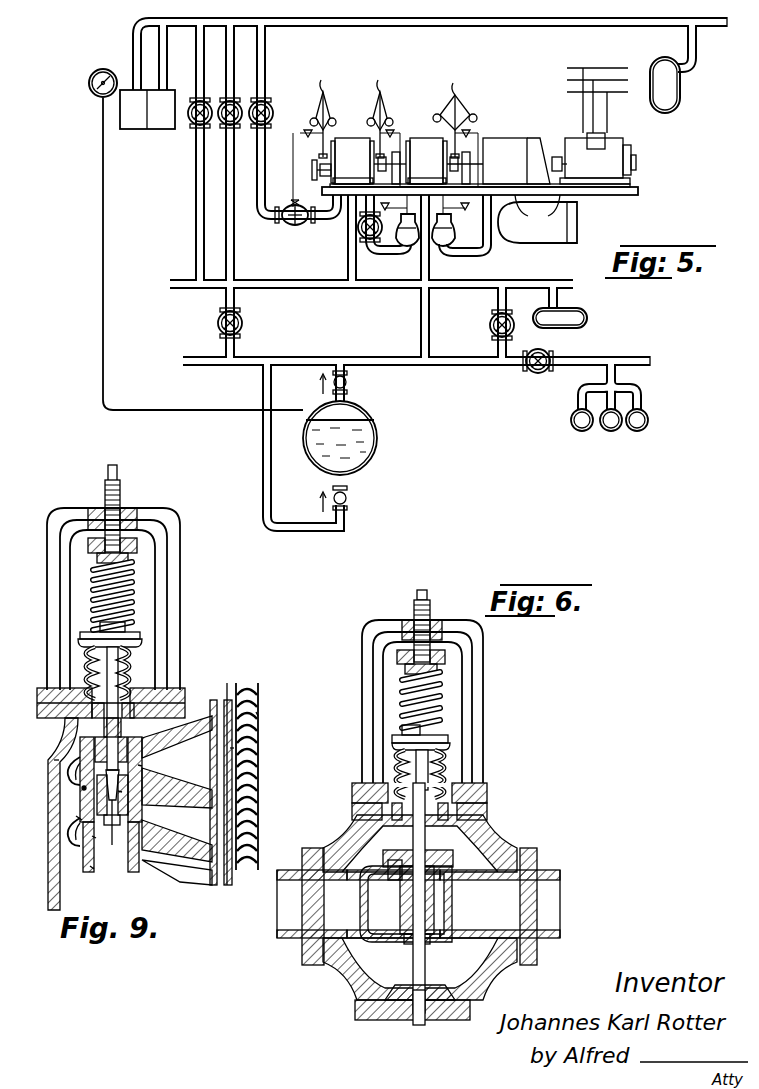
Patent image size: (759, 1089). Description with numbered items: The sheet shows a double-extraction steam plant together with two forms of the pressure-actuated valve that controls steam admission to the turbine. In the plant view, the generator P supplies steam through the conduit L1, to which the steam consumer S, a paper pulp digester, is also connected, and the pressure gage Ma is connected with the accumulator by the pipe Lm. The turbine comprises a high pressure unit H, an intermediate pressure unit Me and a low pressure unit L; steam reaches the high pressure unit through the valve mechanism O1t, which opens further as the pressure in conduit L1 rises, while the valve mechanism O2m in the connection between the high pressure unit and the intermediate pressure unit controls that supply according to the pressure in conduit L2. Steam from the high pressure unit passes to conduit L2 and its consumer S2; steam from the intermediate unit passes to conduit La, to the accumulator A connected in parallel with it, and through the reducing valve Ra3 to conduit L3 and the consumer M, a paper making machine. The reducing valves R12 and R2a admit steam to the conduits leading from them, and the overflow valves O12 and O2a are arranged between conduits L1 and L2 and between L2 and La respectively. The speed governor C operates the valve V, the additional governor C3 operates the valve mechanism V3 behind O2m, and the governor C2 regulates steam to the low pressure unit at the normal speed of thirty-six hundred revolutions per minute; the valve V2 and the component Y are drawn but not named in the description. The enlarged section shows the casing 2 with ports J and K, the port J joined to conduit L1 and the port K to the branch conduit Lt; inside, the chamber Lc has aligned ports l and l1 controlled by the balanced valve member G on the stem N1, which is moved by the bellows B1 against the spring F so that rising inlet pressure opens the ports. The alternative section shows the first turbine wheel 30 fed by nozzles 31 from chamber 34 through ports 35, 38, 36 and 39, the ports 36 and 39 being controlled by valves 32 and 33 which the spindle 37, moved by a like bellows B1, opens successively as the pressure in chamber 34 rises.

In FIG. 5, the pressure gage Ma is at (103, 68).
In FIG. 5, the generator P is at (137, 131).
In FIG. 5, the reducing valve R12 is at (193, 124).
In FIG. 5, the overflow valve O12 is at (237, 125).
In FIG. 5, the valve mechanism O1t is at (269, 104).
In FIG. 6, the valve mechanism O1t is at (335, 711).
In FIG. 5, the speed governor C is at (314, 135).
In FIG. 5, the governor C3 is at (383, 127).
In FIG. 5, the governor C2 is at (455, 127).
In FIG. 5, the high pressure unit H is at (352, 138).
In FIG. 5, the intermediate pressure unit Me is at (425, 138).
In FIG. 5, the low pressure unit L is at (499, 138).
In FIG. 5, the conduit L1 is at (438, 27).
In FIG. 9, the conduit L1 is at (258, 843).
In FIG. 6, the conduit L1 is at (283, 868).
In FIG. 5, the steam consumer S is at (683, 99).
In FIG. 5, the condenser Y is at (577, 222).
In FIG. 5, the valve mechanism V is at (295, 223).
In FIG. 5, the valve mechanism O2m is at (362, 234).
In FIG. 5, the valve mechanism V3 is at (404, 241).
In FIG. 5, the valve V2 is at (446, 242).
In FIG. 5, the conduit L2 is at (466, 282).
In FIG. 5, the pipe Lm is at (104, 234).
In FIG. 5, the overflow valve O2a is at (216, 322).
In FIG. 5, the conduit La is at (200, 366).
In FIG. 5, the steam consumer S2 is at (588, 318).
In FIG. 5, the reducing valve R2a is at (490, 329).
In FIG. 5, the conduit L3 is at (560, 358).
In FIG. 5, the reducing valve Ra3 is at (532, 372).
In FIG. 5, the steam accumulator A is at (359, 412).
In FIG. 5, the steam consumer M is at (616, 451).
In FIG. 9, the first wheel 30 is at (258, 714).
In FIG. 9, the nozzles 31 is at (232, 746).
In FIG. 9, the valve 32 is at (80, 818).
In FIG. 9, the valve 33 is at (104, 722).
In FIG. 9, the chamber 34 is at (62, 757).
In FIG. 9, the ports 35 is at (92, 868).
In FIG. 9, the ports 36 is at (96, 837).
In FIG. 9, the spindle 37 is at (121, 792).
In FIG. 9, the ports 38 is at (84, 788).
In FIG. 9, the ports 39 is at (140, 765).
In FIG. 9, the spring F is at (130, 570).
In FIG. 6, the spring F is at (440, 690).
In FIG. 9, the bellows B1 is at (140, 662).
In FIG. 6, the bellows B1 is at (452, 758).
In FIG. 6, the operating stem N1 is at (388, 768).
In FIG. 6, the casing 2 is at (352, 856).
In FIG. 6, the port l1 is at (394, 866).
In FIG. 6, the valve member G is at (436, 856).
In FIG. 6, the chamber Lc is at (410, 904).
In FIG. 6, the port J is at (312, 904).
In FIG. 6, the port K is at (500, 904).
In FIG. 6, the port l is at (401, 944).
In FIG. 6, the branch conduit Lt is at (548, 947).